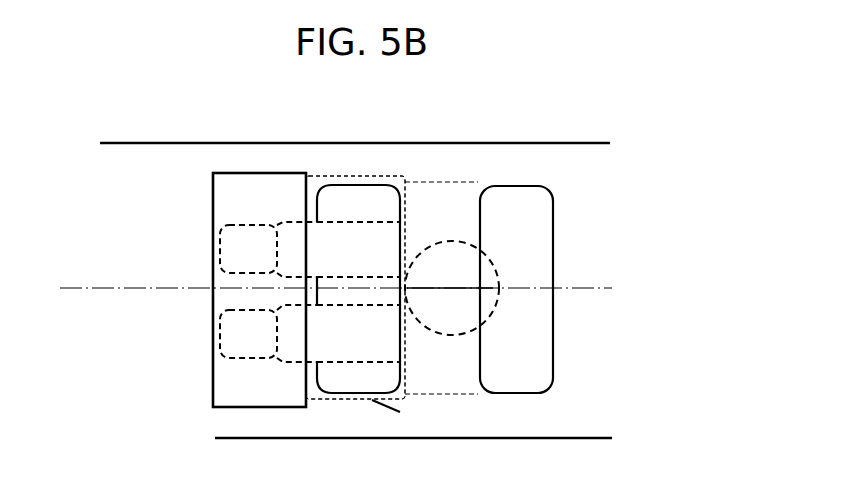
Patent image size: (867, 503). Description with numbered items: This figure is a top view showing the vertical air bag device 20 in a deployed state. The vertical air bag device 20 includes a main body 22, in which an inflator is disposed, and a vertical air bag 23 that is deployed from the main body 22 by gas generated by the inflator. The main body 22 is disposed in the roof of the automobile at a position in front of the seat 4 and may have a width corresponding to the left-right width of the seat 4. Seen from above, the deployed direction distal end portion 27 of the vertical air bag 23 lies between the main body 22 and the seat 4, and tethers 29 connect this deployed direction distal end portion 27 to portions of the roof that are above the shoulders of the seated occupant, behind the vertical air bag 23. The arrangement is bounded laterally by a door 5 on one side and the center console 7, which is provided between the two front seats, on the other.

The seat 4 is at (517, 385).
The door 5 is at (588, 145).
The center console 7 is at (582, 438).
The vertical air bag device 20 is at (141, 268).
The main body 22 is at (218, 202).
The vertical air bag 23 is at (355, 287).
The deployed direction distal end portion 27 is at (356, 250).
The tethers 29 is at (368, 180).